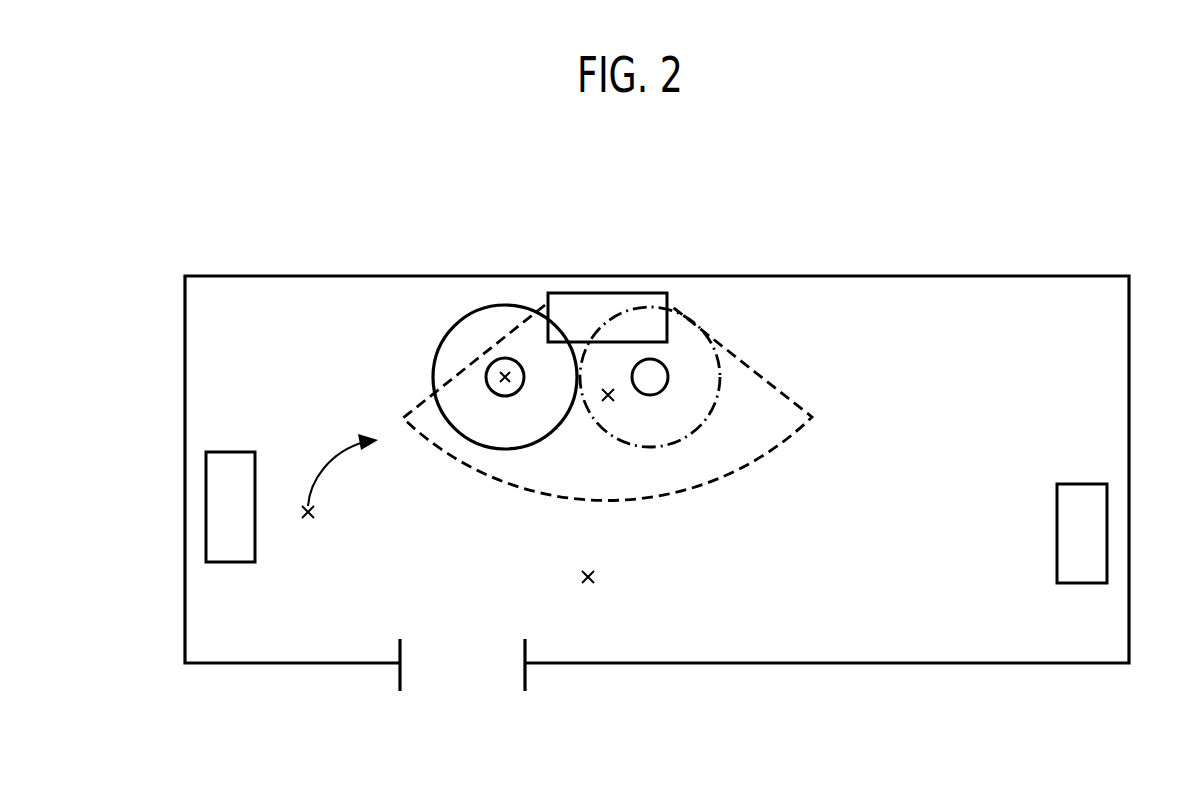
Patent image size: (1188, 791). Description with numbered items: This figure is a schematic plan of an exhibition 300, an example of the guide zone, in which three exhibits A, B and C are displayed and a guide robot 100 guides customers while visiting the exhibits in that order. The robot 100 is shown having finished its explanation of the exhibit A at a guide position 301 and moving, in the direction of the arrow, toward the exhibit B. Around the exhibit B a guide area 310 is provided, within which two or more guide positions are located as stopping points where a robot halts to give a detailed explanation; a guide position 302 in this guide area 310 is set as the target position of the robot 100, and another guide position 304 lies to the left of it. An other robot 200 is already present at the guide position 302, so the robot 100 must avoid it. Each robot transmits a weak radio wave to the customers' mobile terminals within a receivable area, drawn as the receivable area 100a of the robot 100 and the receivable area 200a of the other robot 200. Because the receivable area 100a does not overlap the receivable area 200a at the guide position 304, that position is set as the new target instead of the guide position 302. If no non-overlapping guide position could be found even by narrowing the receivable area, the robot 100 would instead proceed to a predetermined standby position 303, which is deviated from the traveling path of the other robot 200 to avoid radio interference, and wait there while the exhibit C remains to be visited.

The exhibition 300 is at (185, 327).
The robot 100 is at (511, 358).
The receivable area 100a is at (442, 342).
The other robot 200 is at (668, 368).
The receivable area 200a is at (718, 405).
The guide area 310 is at (757, 458).
The guide position 301 is at (315, 514).
The guide position 302 is at (608, 397).
The standby position 303 is at (596, 576).
The guide position 304 is at (505, 396).
The exhibit A is at (207, 545).
The exhibit B is at (621, 292).
The exhibit C is at (1107, 512).